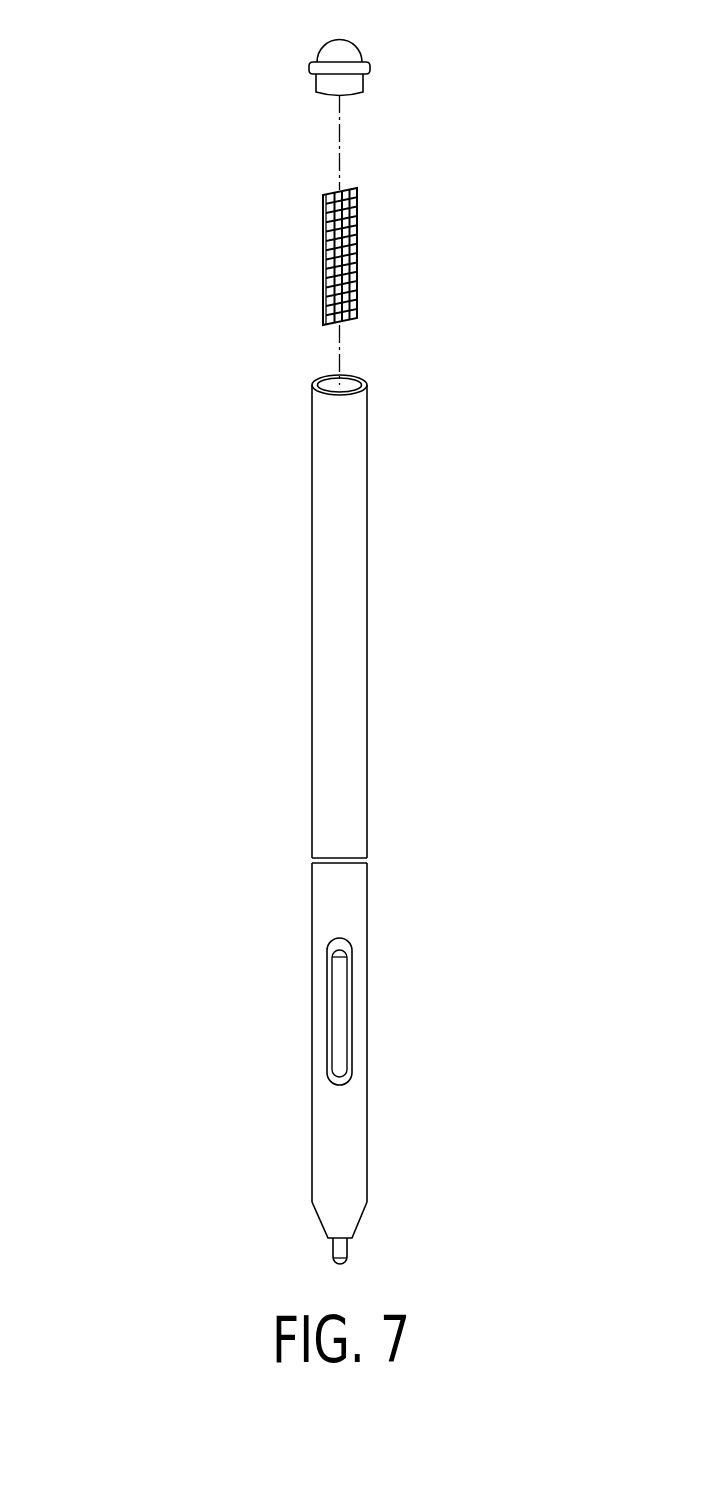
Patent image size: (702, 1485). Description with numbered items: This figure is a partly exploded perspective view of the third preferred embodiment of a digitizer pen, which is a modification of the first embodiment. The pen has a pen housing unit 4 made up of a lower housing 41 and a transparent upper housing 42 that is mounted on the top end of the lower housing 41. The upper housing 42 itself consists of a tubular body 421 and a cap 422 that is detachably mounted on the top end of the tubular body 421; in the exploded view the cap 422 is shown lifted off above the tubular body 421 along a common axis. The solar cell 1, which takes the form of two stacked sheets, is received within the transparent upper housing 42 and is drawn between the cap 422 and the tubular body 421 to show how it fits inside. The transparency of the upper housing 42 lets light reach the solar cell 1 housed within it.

The pen housing unit 4 is at (190, 617).
The lower housing 41 is at (311, 986).
The upper housing 42 is at (311, 645).
The tubular body 421 is at (339, 568).
The cap 422 is at (351, 55).
The solar cell 1 is at (343, 266).